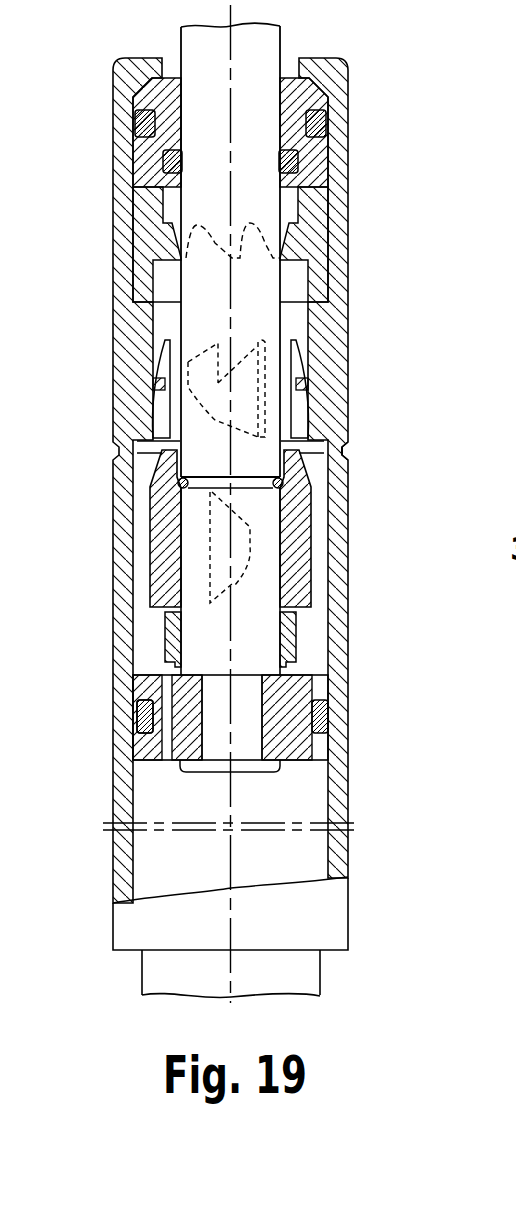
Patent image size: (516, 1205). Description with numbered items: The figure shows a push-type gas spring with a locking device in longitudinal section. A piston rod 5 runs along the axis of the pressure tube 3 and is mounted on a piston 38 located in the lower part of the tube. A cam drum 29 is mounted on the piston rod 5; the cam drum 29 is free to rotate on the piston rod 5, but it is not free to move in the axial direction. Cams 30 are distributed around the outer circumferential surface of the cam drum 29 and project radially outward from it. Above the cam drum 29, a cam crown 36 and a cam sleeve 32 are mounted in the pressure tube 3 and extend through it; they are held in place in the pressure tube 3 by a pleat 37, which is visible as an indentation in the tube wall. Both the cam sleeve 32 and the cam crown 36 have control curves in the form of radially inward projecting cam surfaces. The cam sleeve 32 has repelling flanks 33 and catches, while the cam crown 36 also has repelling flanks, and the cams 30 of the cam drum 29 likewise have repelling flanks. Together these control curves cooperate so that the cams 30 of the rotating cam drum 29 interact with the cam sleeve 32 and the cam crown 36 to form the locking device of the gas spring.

The pressure tube 3 is at (125, 867).
The piston rod 5 is at (197, 42).
The cam drum 29 is at (160, 548).
The cams 30 is at (243, 549).
The cam sleeve 32 is at (150, 393).
The repelling flanks 33 is at (426, 413).
The cam crown 36 is at (145, 215).
The pleat 37 is at (352, 450).
The piston 38 is at (290, 742).